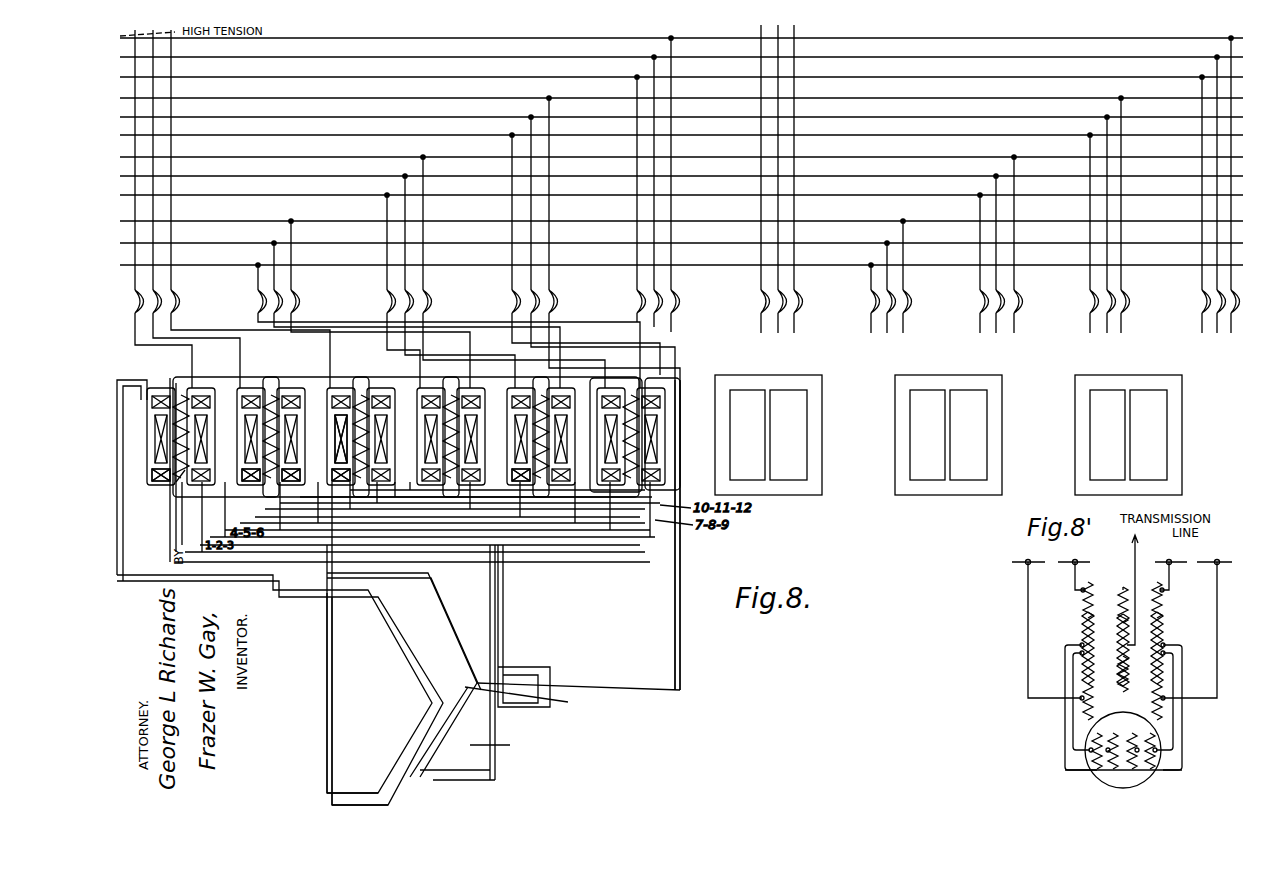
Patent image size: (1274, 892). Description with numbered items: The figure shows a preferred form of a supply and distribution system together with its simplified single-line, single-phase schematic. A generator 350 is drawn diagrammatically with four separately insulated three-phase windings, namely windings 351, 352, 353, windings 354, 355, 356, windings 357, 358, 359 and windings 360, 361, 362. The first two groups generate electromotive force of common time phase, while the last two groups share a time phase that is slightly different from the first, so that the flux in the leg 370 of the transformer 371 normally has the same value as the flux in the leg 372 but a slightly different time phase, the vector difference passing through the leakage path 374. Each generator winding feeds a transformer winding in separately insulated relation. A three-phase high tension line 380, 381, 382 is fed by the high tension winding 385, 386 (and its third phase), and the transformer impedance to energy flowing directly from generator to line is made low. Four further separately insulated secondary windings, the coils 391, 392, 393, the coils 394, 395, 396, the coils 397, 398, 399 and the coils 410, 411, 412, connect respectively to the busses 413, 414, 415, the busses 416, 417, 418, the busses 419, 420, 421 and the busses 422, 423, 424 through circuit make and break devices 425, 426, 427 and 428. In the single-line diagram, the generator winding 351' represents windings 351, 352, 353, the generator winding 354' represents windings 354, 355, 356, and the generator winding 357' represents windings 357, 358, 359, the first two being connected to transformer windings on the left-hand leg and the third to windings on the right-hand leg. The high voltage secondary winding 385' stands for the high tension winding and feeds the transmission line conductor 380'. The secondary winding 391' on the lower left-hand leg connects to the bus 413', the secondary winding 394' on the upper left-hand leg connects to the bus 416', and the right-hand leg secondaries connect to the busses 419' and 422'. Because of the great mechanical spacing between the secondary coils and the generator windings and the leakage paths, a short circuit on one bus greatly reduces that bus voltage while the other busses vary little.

In FIG. 8, the generator 350 is at (515, 745).
In FIG. 8, the generator winding 351 is at (274, 684).
In FIG. 8, the generator winding 352 is at (508, 700).
In FIG. 8, the generator winding 353 is at (397, 785).
In FIG. 8, the generator winding 354 is at (280, 693).
In FIG. 8, the generator winding 355 is at (537, 708).
In FIG. 8, the generator winding 356 is at (398, 793).
In FIG. 8, the generator winding 357 is at (402, 628).
In FIG. 8, the generator winding 358 is at (560, 690).
In FIG. 8, the generator winding 359 is at (440, 730).
In FIG. 8, the generator winding 360 is at (446, 603).
In FIG. 8', the generator winding 360 is at (1160, 775).
In FIG. 8, the generator winding 361 is at (570, 702).
In FIG. 8, the generator winding 362 is at (437, 757).
In FIG. 8, the transformer leg 370 is at (182, 484).
In FIG. 8, the transformer 371 is at (205, 388).
In FIG. 8, the transformer leg 372 is at (268, 482).
In FIG. 8, the leakage path 374 is at (255, 482).
In FIG. 8, the high tension line conductor 380 is at (170, 171).
In FIG. 8, the high tension line conductor 381 is at (158, 280).
In FIG. 8, the high tension line conductor 382 is at (176, 290).
In FIG. 8, the high tension winding 385 is at (154, 436).
In FIG. 8, the high tension winding 386 is at (337, 439).
In FIG. 8, the secondary winding 391 is at (151, 486).
In FIG. 8, the secondary winding 392 is at (340, 483).
In FIG. 8, the secondary winding 393 is at (527, 485).
In FIG. 8, the secondary winding 394 is at (162, 436).
In FIG. 8, the secondary winding 395 is at (342, 388).
In FIG. 8, the secondary winding 396 is at (522, 396).
In FIG. 8, the secondary winding 397 is at (295, 483).
In FIG. 8, the secondary winding 398 is at (471, 441).
In FIG. 8, the secondary winding 399 is at (640, 470).
In FIG. 8, the secondary winding 410 is at (295, 396).
In FIG. 8, the secondary winding 411 is at (430, 396).
In FIG. 8, the secondary winding 412 is at (610, 396).
In FIG. 8, the bus 413 is at (681, 255).
In FIG. 8, the bus 414 is at (323, 243).
In FIG. 8, the bus 415 is at (338, 221).
In FIG. 8, the bus 416 is at (681, 186).
In FIG. 8, the bus 417 is at (347, 176).
In FIG. 8, the bus 418 is at (372, 157).
In FIG. 8, the bus 419 is at (681, 126).
In FIG. 8, the bus 420 is at (407, 117).
In FIG. 8, the bus 421 is at (433, 98).
In FIG. 8, the bus 422 is at (681, 67).
In FIG. 8, the bus 423 is at (484, 57).
In FIG. 8, the bus 424 is at (535, 38).
In FIG. 8, the circuit make and break device 425 is at (296, 300).
In FIG. 8, the circuit make and break device 426 is at (428, 306).
In FIG. 8, the circuit make and break device 427 is at (556, 306).
In FIG. 8, the circuit make and break device 428 is at (678, 308).
In FIG. 8', the bus 413' is at (1033, 629).
In FIG. 8', the bus 416' is at (1063, 577).
In FIG. 8', the bus 419' is at (1180, 577).
In FIG. 8', the bus 422' is at (1204, 621).
In FIG. 8', the transmission line conductor 380' is at (1120, 590).
In FIG. 8', the high voltage secondary winding 385' is at (1122, 639).
In FIG. 8', the secondary winding 394' is at (1067, 651).
In FIG. 8', the secondary winding 391' is at (1129, 651).
In FIG. 8', the generator winding 351' is at (1068, 767).
In FIG. 8', the generator winding 354' is at (1102, 773).
In FIG. 8', the generator winding 357' is at (1149, 773).